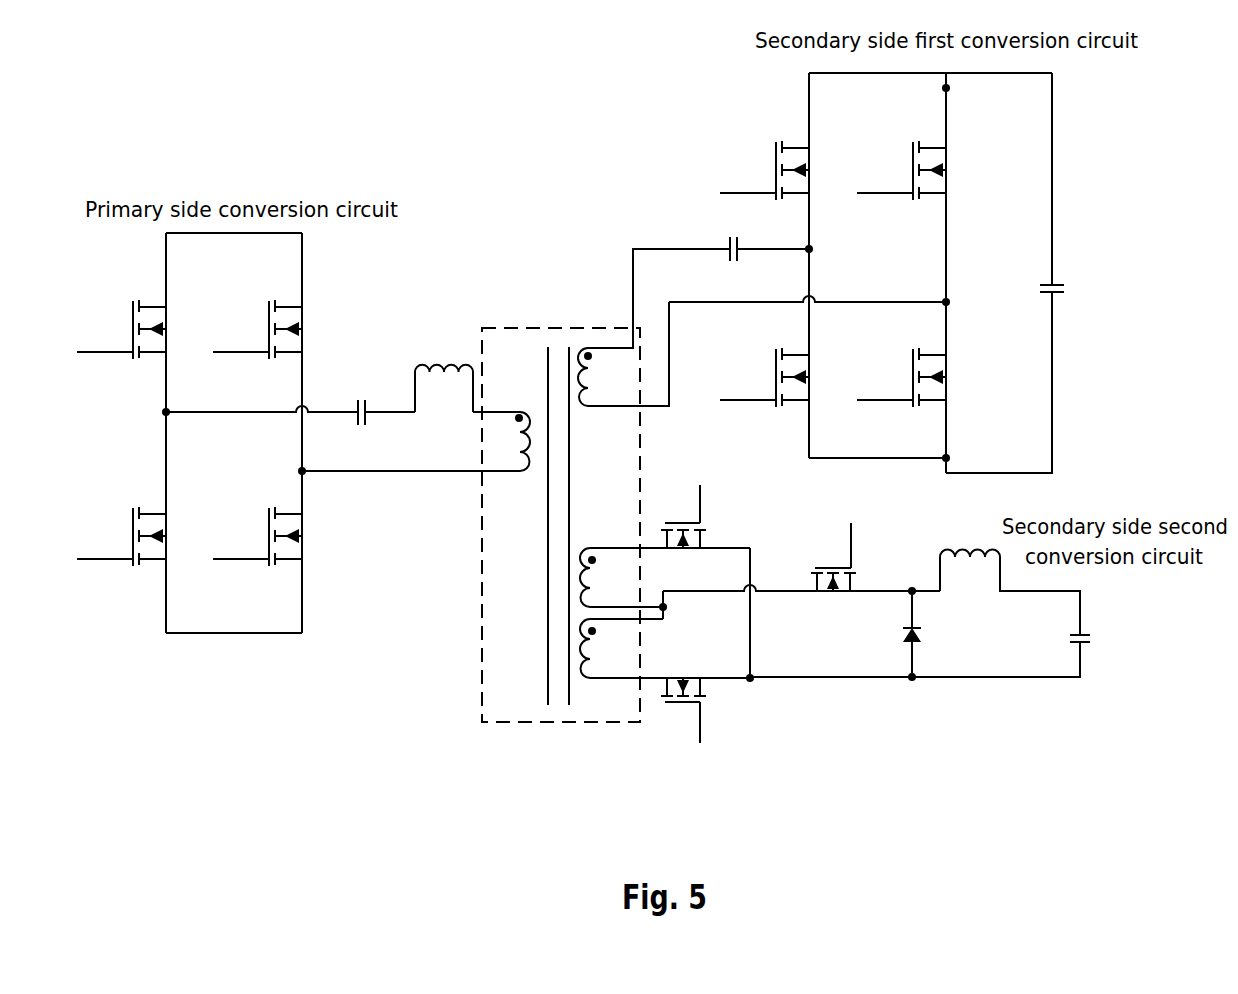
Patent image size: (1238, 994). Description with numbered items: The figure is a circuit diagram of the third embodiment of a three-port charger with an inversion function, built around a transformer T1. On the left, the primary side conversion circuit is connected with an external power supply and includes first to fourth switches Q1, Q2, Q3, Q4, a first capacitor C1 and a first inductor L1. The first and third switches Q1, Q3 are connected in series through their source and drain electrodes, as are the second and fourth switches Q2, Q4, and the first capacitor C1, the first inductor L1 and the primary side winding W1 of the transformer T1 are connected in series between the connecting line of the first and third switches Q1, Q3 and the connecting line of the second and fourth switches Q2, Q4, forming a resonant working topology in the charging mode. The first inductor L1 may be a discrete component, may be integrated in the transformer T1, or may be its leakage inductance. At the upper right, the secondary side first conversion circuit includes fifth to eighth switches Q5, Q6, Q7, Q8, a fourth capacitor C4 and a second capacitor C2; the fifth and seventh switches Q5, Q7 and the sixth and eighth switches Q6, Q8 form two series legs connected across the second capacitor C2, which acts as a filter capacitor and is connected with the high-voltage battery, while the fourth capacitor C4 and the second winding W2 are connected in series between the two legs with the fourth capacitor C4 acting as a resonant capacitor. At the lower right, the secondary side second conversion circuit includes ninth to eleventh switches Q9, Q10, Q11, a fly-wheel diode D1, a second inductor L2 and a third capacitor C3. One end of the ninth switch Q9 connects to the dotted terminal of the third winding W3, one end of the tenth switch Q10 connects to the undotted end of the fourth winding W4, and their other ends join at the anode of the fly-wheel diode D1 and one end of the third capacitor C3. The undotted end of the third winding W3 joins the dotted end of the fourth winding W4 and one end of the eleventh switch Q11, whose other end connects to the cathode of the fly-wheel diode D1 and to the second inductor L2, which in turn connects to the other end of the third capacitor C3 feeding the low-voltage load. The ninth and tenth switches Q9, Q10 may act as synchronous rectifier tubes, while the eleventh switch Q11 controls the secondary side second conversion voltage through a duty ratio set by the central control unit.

The first switch Q1 is at (121, 301).
The second switch Q2 is at (257, 301).
The third switch Q3 is at (121, 507).
The fourth switch Q4 is at (257, 507).
The first capacitor C1 is at (361, 398).
The first inductor L1 is at (444, 375).
The transformer T1 is at (561, 525).
The primary side winding W1 is at (507, 441).
The second winding W2 is at (654, 327).
The third winding W3 is at (623, 577).
The fourth winding W4 is at (623, 648).
The fifth switch Q5 is at (764, 154).
The sixth switch Q6 is at (901, 154).
The seventh switch Q7 is at (764, 362).
The eighth switch Q8 is at (901, 362).
The fourth capacitor C4 is at (732, 235).
The second capacitor C2 is at (1070, 290).
The ninth switch Q9 is at (705, 516).
The tenth switch Q10 is at (707, 710).
The eleventh switch Q11 is at (831, 557).
The second inductor L2 is at (1010, 579).
The fly-wheel diode D1 is at (929, 634).
The third capacitor C3 is at (1096, 636).